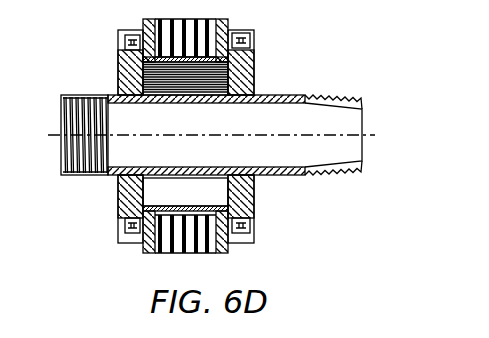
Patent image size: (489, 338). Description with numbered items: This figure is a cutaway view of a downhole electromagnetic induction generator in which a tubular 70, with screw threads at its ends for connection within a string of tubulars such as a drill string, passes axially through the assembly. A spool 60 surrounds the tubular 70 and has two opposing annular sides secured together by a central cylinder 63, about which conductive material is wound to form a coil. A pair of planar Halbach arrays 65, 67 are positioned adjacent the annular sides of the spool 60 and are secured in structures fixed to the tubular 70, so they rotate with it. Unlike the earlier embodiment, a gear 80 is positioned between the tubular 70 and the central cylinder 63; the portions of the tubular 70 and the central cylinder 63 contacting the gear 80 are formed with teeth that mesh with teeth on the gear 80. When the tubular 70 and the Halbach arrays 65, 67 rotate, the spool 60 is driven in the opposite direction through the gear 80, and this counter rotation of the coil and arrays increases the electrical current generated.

The spool 60 is at (257, 238).
The central cylinder 63 is at (153, 208).
The Halbach array 65 is at (119, 48).
The Halbach array 67 is at (255, 40).
The tubular 70 is at (305, 98).
The gear 80 is at (190, 77).